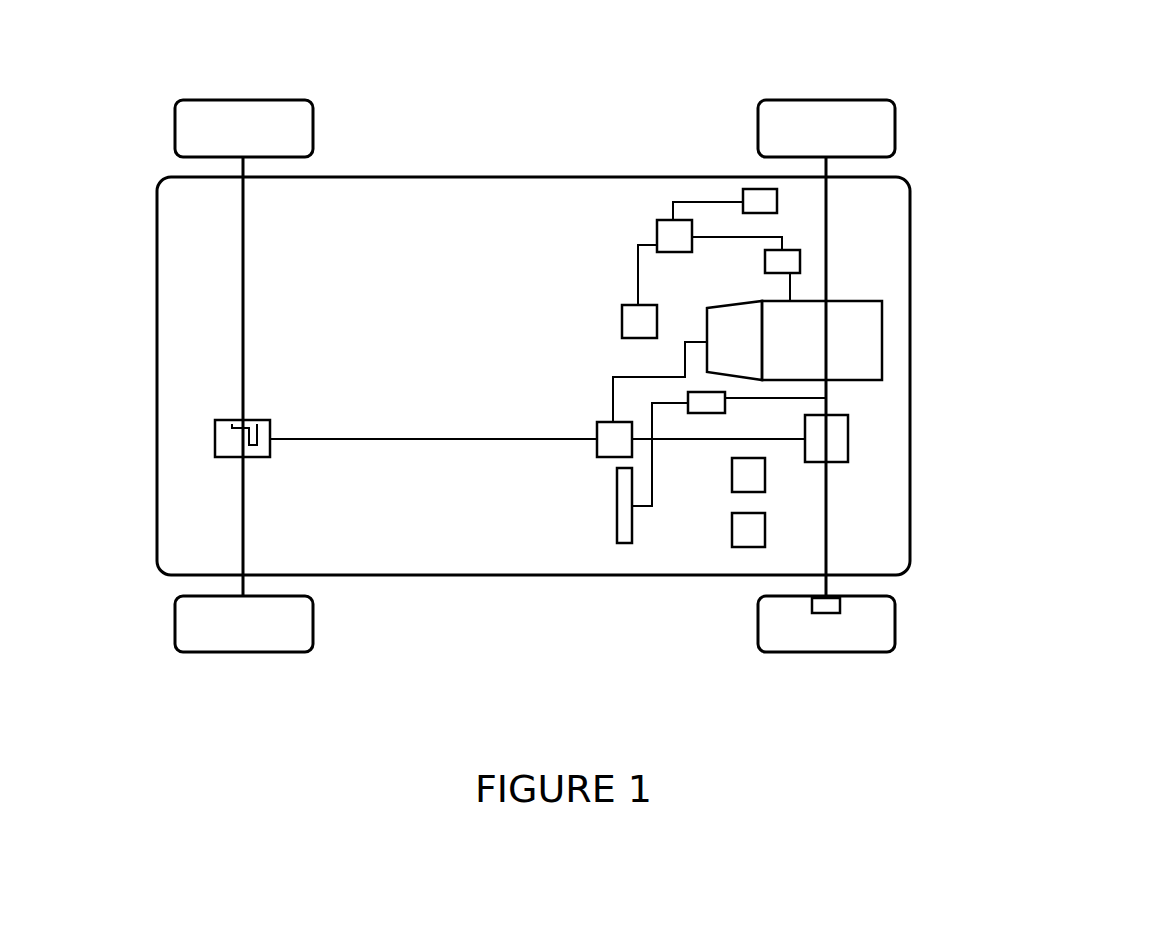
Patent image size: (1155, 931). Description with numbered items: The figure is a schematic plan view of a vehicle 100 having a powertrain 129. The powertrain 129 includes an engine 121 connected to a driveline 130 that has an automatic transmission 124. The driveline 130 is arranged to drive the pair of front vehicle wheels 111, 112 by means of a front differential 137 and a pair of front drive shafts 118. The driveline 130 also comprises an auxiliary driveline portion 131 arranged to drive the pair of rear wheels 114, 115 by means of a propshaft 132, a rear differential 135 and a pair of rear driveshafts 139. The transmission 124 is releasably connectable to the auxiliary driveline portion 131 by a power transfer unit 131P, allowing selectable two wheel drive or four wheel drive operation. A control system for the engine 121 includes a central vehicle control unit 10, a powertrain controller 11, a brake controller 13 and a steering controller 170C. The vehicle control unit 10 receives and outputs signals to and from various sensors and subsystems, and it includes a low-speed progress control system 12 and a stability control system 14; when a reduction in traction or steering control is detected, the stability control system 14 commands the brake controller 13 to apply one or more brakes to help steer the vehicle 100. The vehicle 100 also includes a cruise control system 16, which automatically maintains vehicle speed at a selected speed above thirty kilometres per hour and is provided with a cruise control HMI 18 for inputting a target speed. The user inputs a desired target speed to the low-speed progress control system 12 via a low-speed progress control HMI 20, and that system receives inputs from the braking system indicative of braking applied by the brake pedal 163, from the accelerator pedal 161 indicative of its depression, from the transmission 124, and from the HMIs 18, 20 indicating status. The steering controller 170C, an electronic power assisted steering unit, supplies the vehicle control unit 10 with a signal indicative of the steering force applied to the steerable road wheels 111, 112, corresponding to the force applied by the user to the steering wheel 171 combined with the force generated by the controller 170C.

The vehicle 100 is at (1050, 117).
The vehicle control unit 10 is at (661, 132).
The low-speed progress control system 12 is at (661, 132).
The stability control system 14 is at (661, 132).
The cruise control system 16 is at (668, 228).
The brake controller 13 is at (750, 200).
The cruise control HMI 18 is at (584, 218).
The low-speed progress control HMI 20 is at (634, 318).
The powertrain controller 11 is at (800, 263).
The front vehicle wheel 111 is at (878, 122).
The front vehicle wheel 112 is at (878, 650).
The rear wheel 114 is at (213, 122).
The rear wheel 115 is at (203, 630).
The front drive shaft 118 is at (826, 219).
The engine 121 is at (851, 327).
The automatic transmission 124 is at (733, 322).
The powertrain 129 is at (1048, 371).
The driveline 130 is at (1015, 556).
The auxiliary driveline portion 131 is at (429, 622).
The power transfer unit 131P is at (607, 447).
The propshaft 132 is at (393, 440).
The rear differential 135 is at (215, 443).
The front differential 137 is at (842, 438).
The rear driveshaft 139 is at (238, 265).
The accelerator pedal 161 is at (747, 537).
The brake pedal 163 is at (714, 546).
The steering controller 170C is at (705, 405).
The steering wheel 171 is at (622, 537).